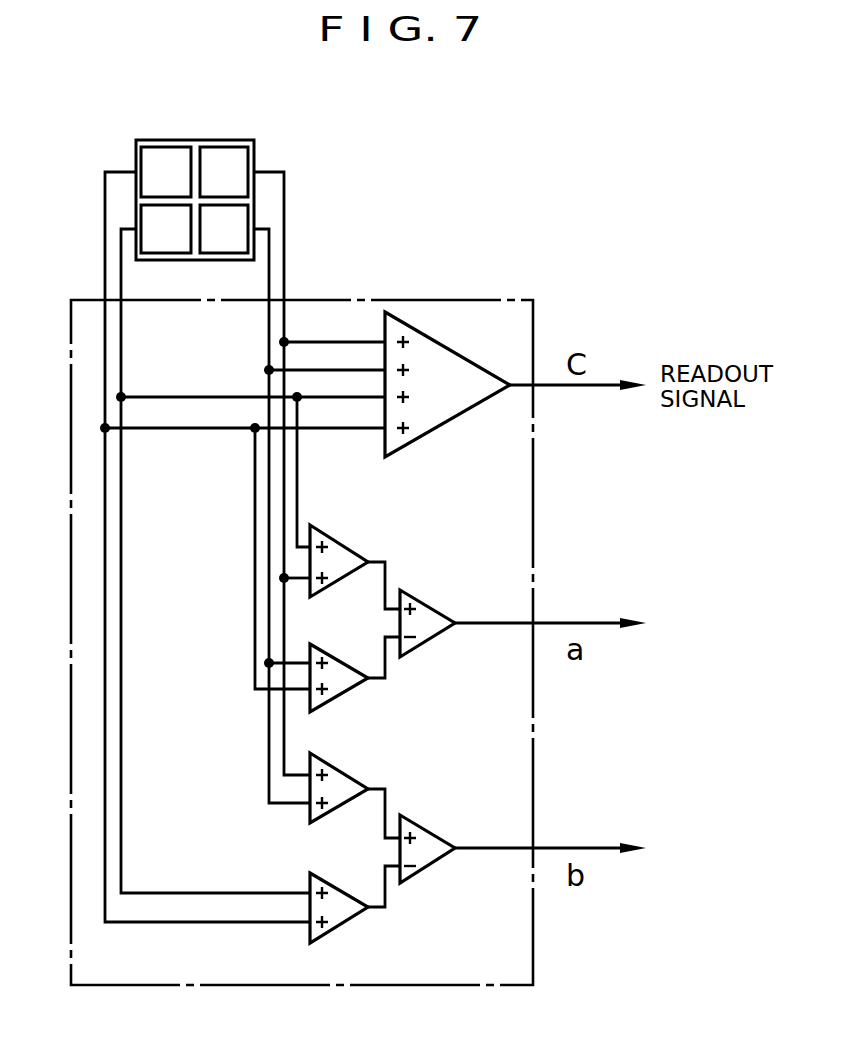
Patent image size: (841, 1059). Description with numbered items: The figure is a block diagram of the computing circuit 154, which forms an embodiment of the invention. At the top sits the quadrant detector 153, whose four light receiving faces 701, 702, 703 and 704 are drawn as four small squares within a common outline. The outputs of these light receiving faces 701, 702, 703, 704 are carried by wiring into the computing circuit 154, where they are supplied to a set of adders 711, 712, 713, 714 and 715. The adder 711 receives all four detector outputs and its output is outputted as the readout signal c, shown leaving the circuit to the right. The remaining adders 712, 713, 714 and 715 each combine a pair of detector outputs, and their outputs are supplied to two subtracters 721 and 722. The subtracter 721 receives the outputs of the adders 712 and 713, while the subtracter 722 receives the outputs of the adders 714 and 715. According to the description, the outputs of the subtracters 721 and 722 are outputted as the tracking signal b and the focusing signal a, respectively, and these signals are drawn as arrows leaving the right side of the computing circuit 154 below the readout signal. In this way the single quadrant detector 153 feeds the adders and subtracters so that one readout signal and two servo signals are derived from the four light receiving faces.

The quadrant detector 153 is at (195, 140).
The computing circuit 154 is at (533, 965).
The light receiving face 701 is at (157, 147).
The light receiving face 702 is at (138, 215).
The light receiving face 703 is at (250, 155).
The light receiving face 704 is at (250, 220).
The adder 711 is at (440, 340).
The adder 712 is at (327, 531).
The adder 713 is at (347, 690).
The adder 714 is at (353, 772).
The adder 715 is at (348, 918).
The subtracter 721 is at (423, 600).
The subtracter 722 is at (432, 832).